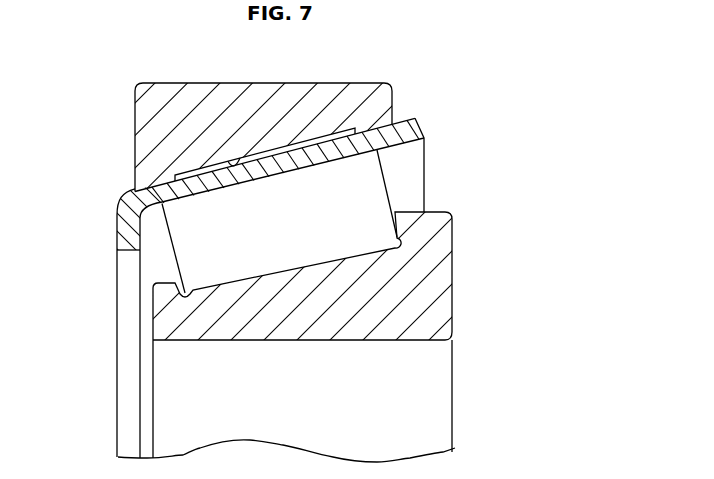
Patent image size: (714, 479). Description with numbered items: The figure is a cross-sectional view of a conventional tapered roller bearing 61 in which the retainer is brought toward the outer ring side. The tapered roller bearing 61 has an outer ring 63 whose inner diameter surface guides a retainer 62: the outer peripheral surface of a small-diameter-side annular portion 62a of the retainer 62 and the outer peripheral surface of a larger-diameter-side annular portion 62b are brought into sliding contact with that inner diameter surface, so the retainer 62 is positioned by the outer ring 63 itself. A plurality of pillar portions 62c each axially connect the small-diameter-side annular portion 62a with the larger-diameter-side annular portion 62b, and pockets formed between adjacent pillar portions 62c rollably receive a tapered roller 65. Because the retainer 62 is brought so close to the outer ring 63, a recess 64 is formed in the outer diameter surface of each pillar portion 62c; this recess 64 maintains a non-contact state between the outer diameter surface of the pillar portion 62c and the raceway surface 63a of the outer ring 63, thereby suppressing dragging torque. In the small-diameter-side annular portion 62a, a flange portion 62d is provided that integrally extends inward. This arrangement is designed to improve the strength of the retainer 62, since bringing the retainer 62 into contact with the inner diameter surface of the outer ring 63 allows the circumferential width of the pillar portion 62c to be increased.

The tapered roller bearing 61 is at (492, 67).
The retainer 62 is at (424, 123).
The small-diameter-side annular portion 62a is at (152, 193).
The larger-diameter-side annular portion 62b is at (408, 125).
The pillar portion 62c is at (222, 188).
The flange portion 62d is at (120, 242).
The outer ring 63 is at (253, 92).
The raceway surface 63a is at (233, 160).
The recess 64 is at (310, 135).
The tapered roller 65 is at (352, 242).